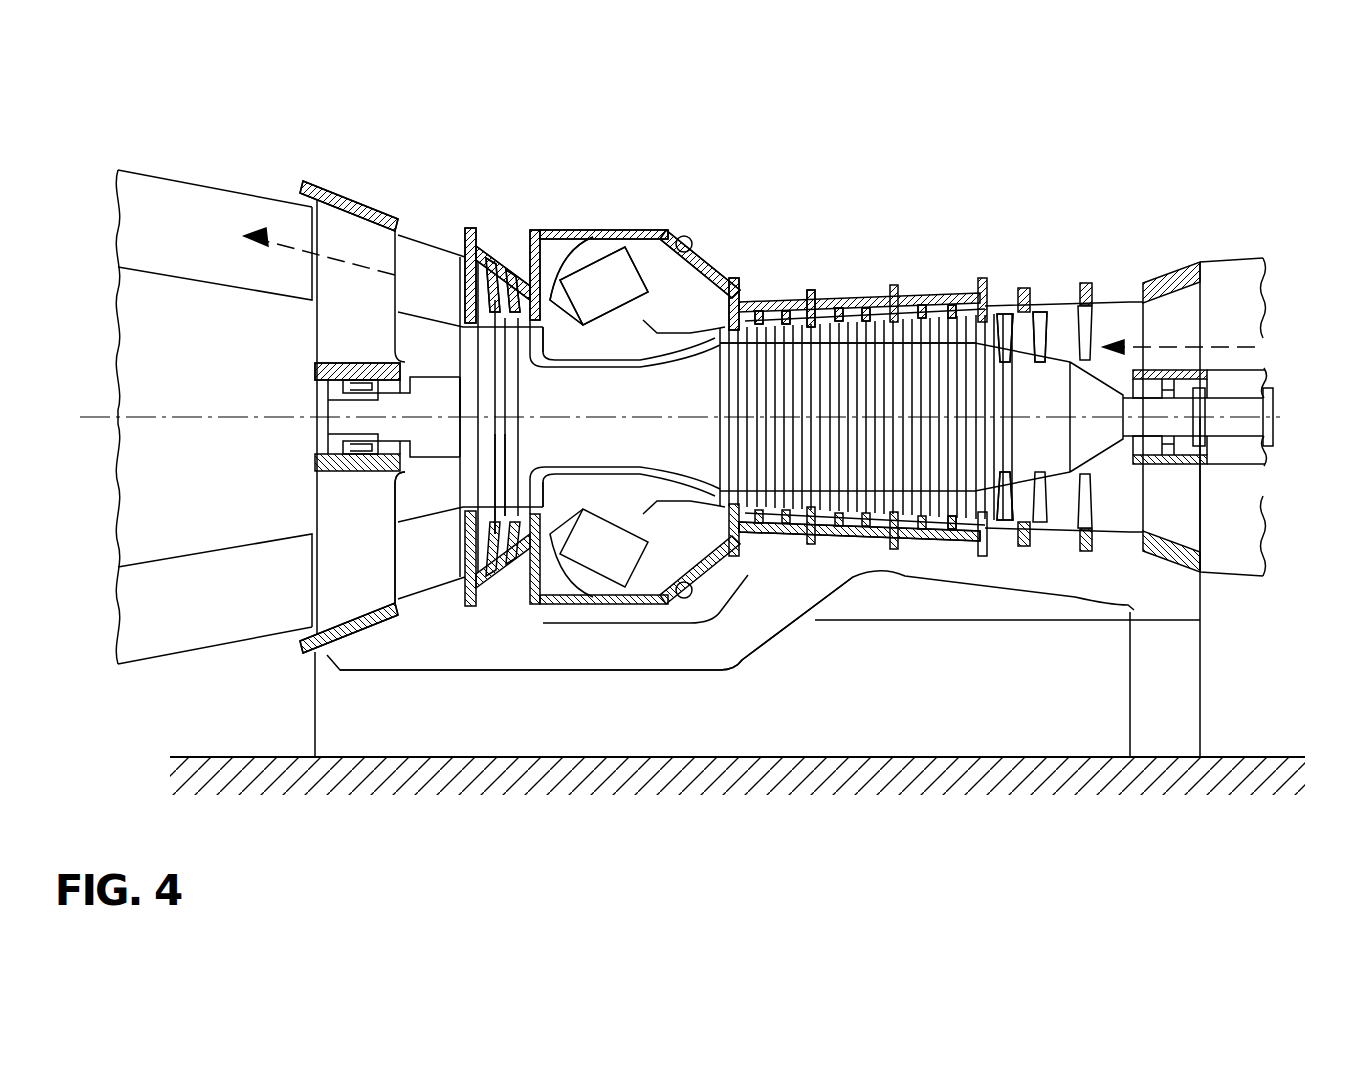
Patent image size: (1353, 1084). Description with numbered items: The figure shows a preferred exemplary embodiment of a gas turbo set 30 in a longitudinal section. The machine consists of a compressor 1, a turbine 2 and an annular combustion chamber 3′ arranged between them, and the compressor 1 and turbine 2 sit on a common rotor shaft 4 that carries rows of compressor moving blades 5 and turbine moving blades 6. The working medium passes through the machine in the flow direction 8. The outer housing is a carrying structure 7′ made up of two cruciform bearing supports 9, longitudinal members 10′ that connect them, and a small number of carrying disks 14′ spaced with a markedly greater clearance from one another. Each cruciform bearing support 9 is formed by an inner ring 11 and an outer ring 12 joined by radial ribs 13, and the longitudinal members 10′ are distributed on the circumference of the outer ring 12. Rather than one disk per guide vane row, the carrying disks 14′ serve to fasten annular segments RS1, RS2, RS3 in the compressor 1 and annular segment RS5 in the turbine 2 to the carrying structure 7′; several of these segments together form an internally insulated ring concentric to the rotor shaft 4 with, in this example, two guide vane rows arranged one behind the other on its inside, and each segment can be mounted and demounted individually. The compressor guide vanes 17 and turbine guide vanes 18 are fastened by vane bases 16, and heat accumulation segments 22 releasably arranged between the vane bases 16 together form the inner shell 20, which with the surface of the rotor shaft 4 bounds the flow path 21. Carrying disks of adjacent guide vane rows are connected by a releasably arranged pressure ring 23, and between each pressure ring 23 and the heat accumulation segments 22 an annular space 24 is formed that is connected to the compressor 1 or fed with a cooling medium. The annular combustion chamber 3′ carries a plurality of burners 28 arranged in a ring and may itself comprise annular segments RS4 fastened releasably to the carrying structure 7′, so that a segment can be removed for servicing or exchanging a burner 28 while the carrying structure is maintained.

The compressor 1 is at (963, 363).
The turbine 2 is at (488, 390).
The annular combustion chamber 3′ is at (643, 218).
The rotor shaft 4 is at (637, 407).
The compressor moving blades 5 is at (1013, 322).
The turbine moving blades 6 is at (489, 246).
The carrying structure 7′ is at (633, 670).
The flow direction 8 is at (1125, 343).
The cruciform bearing supports 9 is at (1180, 322).
The longitudinal members 10′ is at (703, 650).
The inner ring 11 is at (357, 465).
The outer ring 12 is at (375, 622).
The radial ribs 13 is at (345, 590).
The carrying disks 14′ is at (980, 513).
The vane bases 16 is at (950, 507).
The compressor guide vanes 17 is at (997, 517).
The turbine guide vanes 18 is at (535, 315).
The inner shell 20 is at (467, 593).
The flow path 21 is at (1005, 337).
The heat accumulation segments 22 is at (799, 512).
The pressure ring 23 is at (848, 322).
The annular space 24 is at (799, 322).
The burners 28 is at (600, 292).
The gas turbo set 30 is at (1320, 694).
The annular segment RS1 is at (935, 320).
The annular segment RS2 is at (865, 318).
The annular segment RS3 is at (778, 322).
The annular segment RS4 is at (668, 233).
The annular segment RS5 is at (503, 245).